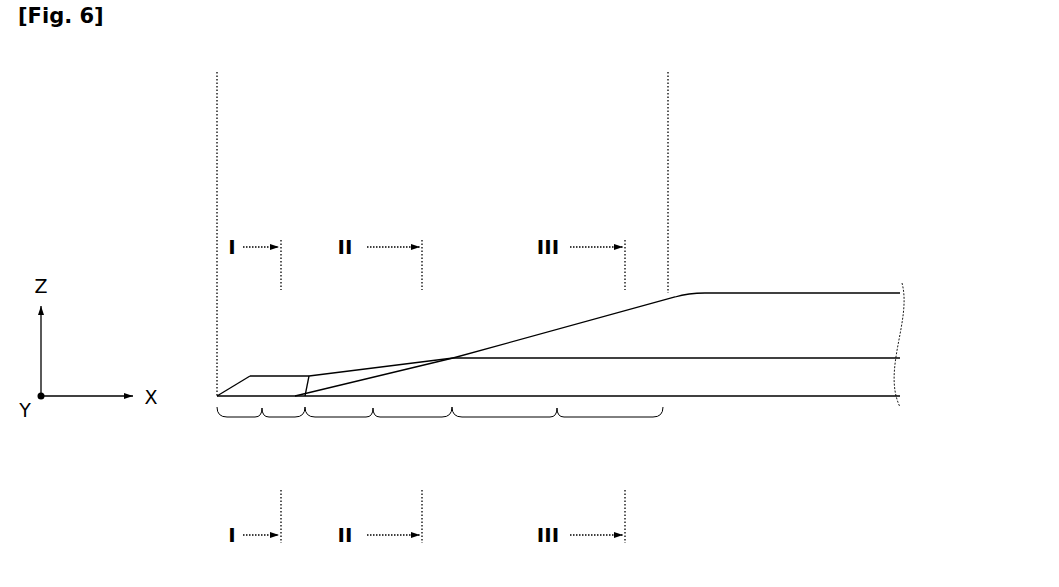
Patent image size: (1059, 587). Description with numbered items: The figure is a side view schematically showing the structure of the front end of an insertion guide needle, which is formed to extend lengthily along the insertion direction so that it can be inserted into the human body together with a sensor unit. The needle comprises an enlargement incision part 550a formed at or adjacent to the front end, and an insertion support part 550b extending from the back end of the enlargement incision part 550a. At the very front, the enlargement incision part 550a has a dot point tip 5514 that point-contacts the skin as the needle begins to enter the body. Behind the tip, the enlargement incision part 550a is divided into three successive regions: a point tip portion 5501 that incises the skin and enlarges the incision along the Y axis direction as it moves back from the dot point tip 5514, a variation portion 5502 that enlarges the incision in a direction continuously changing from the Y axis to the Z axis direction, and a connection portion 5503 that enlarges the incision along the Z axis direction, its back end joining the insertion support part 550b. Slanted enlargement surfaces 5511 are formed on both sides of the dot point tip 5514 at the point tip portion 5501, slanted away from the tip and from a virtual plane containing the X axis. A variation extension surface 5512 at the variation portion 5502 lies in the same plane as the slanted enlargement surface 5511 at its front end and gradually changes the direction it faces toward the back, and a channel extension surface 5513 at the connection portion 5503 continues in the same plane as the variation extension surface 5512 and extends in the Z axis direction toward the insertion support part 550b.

The enlargement incision part 550a is at (218, 72).
The insertion support part 550b is at (669, 72).
The point tip portion 5501 is at (261, 432).
The variation portion 5502 is at (378, 432).
The connection portion 5503 is at (557, 432).
The slanted enlargement surface 5511 is at (272, 387).
The variation extension surface 5512 is at (346, 376).
The channel extension surface 5513 is at (498, 343).
The dot point tip 5514 is at (217, 396).